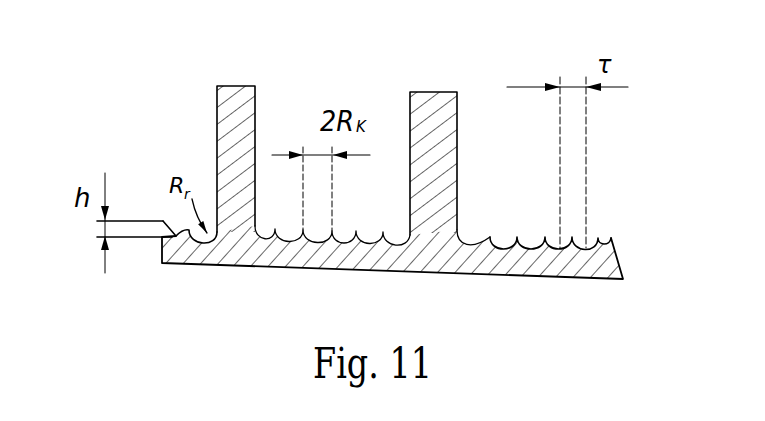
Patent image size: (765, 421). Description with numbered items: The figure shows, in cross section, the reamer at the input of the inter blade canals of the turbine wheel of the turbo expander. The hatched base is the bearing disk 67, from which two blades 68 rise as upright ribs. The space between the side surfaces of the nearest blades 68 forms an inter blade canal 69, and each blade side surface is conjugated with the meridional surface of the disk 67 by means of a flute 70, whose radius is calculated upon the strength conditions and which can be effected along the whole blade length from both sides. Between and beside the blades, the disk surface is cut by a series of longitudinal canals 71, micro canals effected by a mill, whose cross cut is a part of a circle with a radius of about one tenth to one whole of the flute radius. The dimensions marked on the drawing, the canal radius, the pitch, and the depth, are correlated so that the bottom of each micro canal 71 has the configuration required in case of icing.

The bearing disk 67 is at (248, 262).
The blade 68 is at (430, 210).
The inter blade canal 69 is at (275, 102).
The flute 70 is at (190, 262).
The longitudinal canal 71 is at (508, 245).